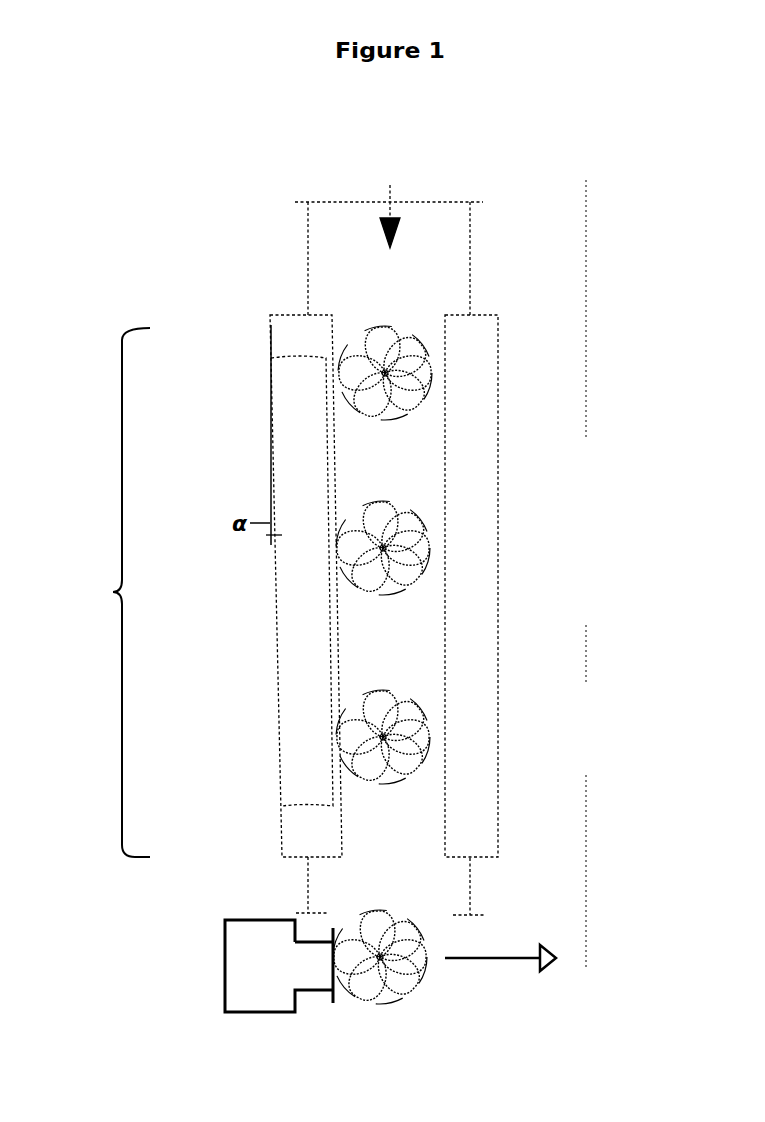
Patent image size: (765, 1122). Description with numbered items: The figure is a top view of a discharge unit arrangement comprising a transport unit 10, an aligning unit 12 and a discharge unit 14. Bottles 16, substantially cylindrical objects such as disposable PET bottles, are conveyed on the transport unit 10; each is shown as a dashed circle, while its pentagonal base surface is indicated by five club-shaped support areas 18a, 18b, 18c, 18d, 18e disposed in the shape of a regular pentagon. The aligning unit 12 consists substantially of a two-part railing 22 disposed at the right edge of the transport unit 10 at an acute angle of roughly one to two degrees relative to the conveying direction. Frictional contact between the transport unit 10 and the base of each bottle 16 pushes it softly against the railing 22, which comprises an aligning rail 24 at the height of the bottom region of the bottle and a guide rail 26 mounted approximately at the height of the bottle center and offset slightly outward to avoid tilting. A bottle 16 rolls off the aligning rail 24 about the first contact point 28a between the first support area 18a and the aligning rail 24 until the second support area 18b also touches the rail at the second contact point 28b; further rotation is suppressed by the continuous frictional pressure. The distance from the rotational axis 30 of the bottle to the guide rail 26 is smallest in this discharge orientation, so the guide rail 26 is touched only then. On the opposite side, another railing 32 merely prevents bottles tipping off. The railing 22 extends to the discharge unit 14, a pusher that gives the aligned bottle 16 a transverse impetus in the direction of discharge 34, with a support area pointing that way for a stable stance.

The transport unit 10 is at (317, 281).
The aligning unit 12 is at (112, 592).
The discharge unit 14 is at (225, 971).
The bottle 16 is at (370, 381).
The first support area 18a is at (355, 372).
The second support area 18b is at (365, 570).
The support area 18c is at (413, 578).
The support area 18d is at (427, 540).
The support area 18e is at (388, 502).
The railing 22 is at (244, 607).
The aligning rail 24 is at (276, 329).
The guide rail 26 is at (300, 733).
The first contact point 28a is at (343, 713).
The second contact point 28b is at (343, 762).
The rotational axis of the bottle 30 is at (401, 543).
The railing 32 is at (477, 328).
The direction of discharge 34 is at (500, 980).